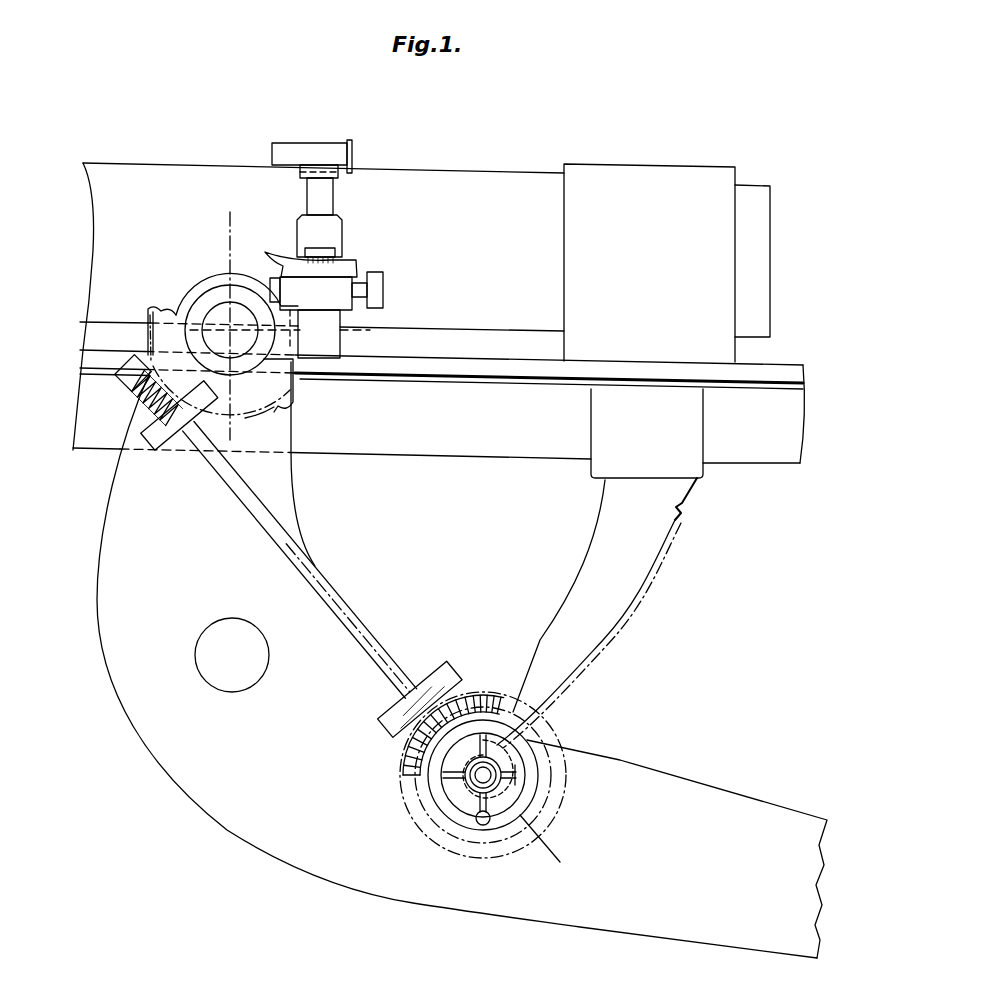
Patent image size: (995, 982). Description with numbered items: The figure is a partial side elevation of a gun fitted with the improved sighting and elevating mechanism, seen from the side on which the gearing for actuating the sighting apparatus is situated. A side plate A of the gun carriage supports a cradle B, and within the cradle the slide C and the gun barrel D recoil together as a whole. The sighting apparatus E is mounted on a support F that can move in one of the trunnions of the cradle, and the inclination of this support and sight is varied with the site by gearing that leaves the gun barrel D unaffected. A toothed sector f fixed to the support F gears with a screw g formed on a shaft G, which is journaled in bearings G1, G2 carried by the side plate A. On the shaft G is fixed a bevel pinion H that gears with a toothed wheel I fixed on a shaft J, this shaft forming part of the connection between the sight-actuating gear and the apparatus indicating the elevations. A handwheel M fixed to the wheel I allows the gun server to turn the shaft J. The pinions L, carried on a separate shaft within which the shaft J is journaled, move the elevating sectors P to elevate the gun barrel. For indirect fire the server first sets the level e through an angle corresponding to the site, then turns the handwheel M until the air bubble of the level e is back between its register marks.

The side plate A is at (235, 827).
The cradle B is at (477, 445).
The slide C is at (88, 358).
The gun barrel D is at (468, 186).
The sighting apparatus E is at (322, 150).
The spirit level e is at (328, 257).
The support F is at (283, 343).
The toothed sector f is at (150, 310).
The screw g is at (137, 400).
The shaft G is at (312, 577).
The bearing G1 is at (184, 426).
The bearing G2 is at (407, 702).
The bevel pinion H is at (455, 707).
The toothed wheel I is at (487, 697).
The shaft J is at (480, 787).
The pinion L is at (447, 767).
The handwheel M is at (453, 803).
The elevating sector P is at (640, 565).